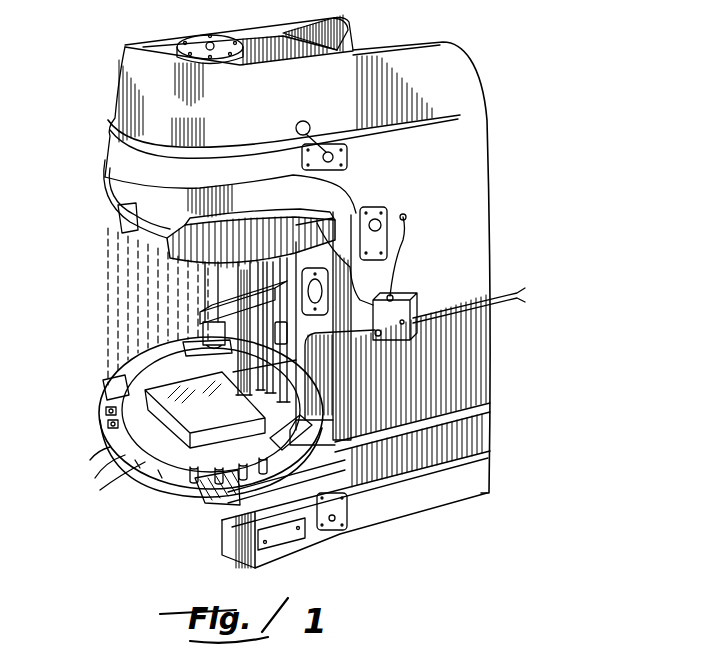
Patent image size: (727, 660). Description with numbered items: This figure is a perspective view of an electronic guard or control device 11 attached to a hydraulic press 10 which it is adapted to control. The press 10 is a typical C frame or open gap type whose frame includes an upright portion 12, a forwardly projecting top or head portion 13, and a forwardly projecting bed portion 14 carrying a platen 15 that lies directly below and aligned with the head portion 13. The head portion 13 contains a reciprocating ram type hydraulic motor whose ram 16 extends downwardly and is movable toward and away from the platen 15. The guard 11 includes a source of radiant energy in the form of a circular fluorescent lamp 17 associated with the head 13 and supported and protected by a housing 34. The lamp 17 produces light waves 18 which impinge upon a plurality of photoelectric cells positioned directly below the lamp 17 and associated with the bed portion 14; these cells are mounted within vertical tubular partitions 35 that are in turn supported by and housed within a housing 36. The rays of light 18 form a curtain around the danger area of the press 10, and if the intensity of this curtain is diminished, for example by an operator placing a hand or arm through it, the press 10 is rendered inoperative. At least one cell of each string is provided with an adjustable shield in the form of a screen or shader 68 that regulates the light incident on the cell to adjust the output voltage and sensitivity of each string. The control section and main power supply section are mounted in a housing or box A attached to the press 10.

The hydraulic press 10 is at (550, 83).
The electronic guard or control device 11 is at (87, 300).
The upright portion 12 is at (484, 200).
The top or head portion 13 is at (130, 72).
The bed portion 14 is at (290, 503).
The platen 15 is at (105, 405).
The ram 16 is at (211, 271).
The circular fluorescent lamp 17 is at (150, 230).
The light waves 18 is at (107, 257).
The housing 34 is at (108, 186).
The vertical tubular partitions 35 is at (203, 503).
The housing 36 is at (106, 425).
The screen or shader 68 is at (108, 460).
The housing or box A is at (413, 292).